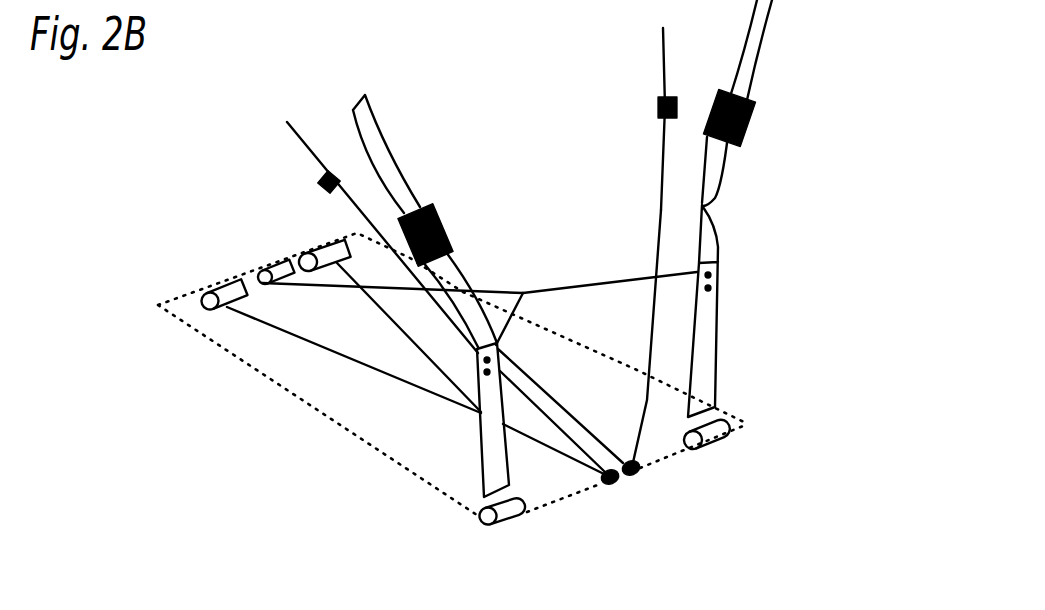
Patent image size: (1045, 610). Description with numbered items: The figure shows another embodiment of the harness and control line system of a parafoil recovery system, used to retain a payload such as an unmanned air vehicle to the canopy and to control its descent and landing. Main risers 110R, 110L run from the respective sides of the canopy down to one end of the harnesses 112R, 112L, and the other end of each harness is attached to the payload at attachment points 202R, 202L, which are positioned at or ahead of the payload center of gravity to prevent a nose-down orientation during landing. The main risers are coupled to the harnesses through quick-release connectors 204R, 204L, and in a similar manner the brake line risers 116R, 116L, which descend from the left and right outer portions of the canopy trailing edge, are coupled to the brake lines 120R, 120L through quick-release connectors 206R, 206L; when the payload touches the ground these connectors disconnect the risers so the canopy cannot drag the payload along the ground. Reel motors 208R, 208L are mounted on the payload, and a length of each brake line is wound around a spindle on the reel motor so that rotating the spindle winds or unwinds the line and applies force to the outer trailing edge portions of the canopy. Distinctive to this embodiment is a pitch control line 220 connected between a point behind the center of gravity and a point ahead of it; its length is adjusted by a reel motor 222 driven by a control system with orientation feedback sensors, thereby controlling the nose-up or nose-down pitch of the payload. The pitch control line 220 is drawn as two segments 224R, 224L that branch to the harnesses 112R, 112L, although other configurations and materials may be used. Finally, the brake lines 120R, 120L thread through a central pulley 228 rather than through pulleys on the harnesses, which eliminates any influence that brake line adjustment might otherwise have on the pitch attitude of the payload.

The main riser 110R is at (387, 122).
The main riser 110L is at (768, 13).
The harness 112R is at (477, 422).
The harness 112L is at (723, 350).
The brake line riser 116R is at (293, 143).
The brake line riser 116L is at (660, 58).
The brake line 120R is at (383, 375).
The brake line 120L is at (657, 182).
The attachment point 202R is at (478, 522).
The attachment point 202L is at (720, 438).
The quick-release connector 204R is at (445, 217).
The quick-release connector 204L is at (752, 128).
The quick-release connector 206R is at (314, 188).
The quick-release connector 206L is at (657, 107).
The reel motor 208R is at (193, 297).
The reel motor 208L is at (313, 247).
The pitch control line 220 is at (493, 290).
The reel motor 222 is at (259, 272).
The segment 224L is at (562, 295).
The segment 224R is at (503, 333).
The central pulley 228 is at (622, 475).